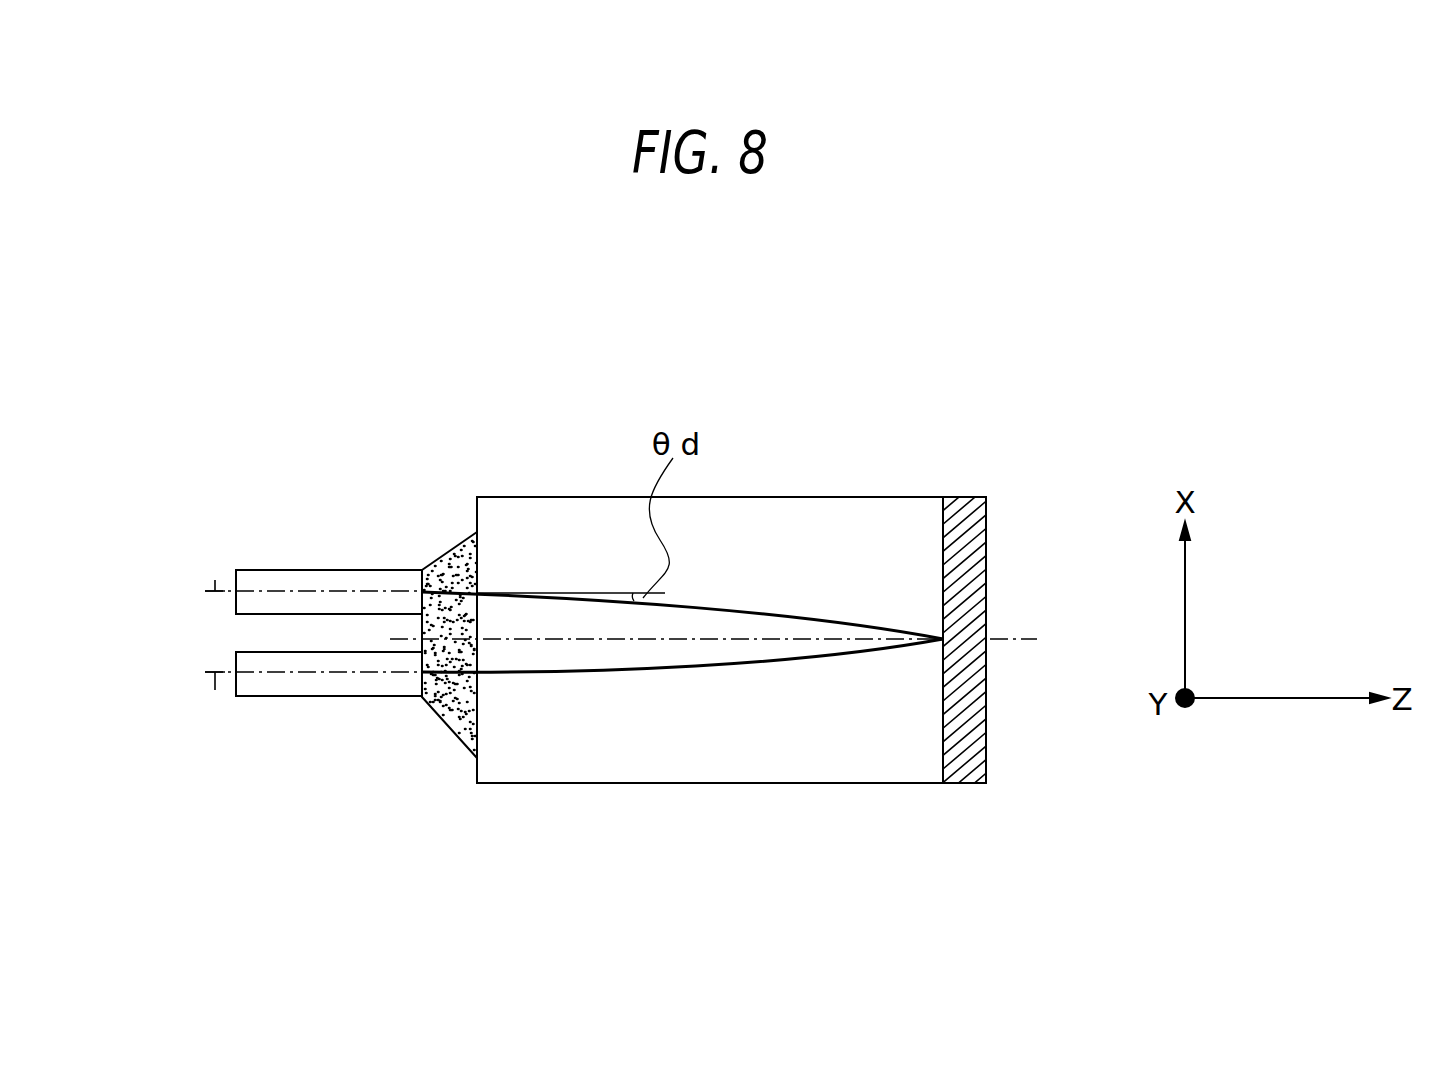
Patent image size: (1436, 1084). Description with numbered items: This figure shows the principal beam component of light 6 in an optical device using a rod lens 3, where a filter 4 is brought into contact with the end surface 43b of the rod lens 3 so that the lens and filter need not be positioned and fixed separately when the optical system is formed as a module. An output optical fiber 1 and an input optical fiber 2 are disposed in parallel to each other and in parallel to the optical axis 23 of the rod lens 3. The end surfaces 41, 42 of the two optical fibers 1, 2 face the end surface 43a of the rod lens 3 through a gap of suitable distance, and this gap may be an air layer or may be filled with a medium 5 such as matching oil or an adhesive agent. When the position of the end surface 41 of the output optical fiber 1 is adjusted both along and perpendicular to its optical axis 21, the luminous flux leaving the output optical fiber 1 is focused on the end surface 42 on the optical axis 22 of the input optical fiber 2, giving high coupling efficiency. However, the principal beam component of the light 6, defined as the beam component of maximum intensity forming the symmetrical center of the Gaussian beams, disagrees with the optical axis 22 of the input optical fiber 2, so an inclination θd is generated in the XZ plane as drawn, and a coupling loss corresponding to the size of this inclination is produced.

The output optical fiber 1 is at (327, 690).
The input optical fiber 2 is at (320, 578).
The optical axis of the output optical fiber 21 is at (215, 684).
The optical axis of the input optical fiber 22 is at (215, 580).
The rod lens 3 is at (810, 530).
The filter 4 is at (986, 518).
The medium 5 is at (460, 537).
The light beam 6 is at (697, 617).
The end surface of the output optical fiber 41 is at (423, 680).
The end surface of the input optical fiber 42 is at (423, 592).
The end surface of the rod lens 43a is at (477, 728).
The end surface of the rod lens 43b is at (943, 762).
The optical axis of the rod lens 23 is at (1008, 642).